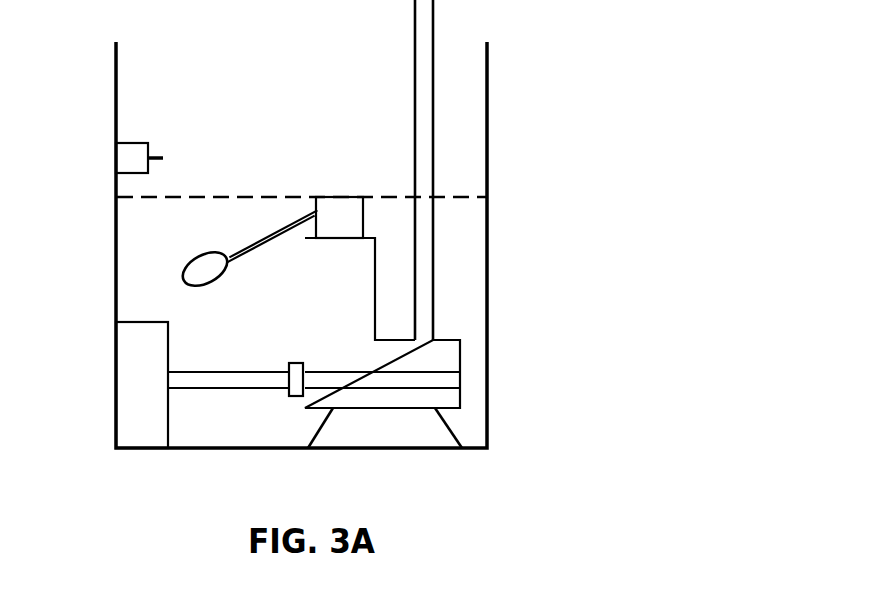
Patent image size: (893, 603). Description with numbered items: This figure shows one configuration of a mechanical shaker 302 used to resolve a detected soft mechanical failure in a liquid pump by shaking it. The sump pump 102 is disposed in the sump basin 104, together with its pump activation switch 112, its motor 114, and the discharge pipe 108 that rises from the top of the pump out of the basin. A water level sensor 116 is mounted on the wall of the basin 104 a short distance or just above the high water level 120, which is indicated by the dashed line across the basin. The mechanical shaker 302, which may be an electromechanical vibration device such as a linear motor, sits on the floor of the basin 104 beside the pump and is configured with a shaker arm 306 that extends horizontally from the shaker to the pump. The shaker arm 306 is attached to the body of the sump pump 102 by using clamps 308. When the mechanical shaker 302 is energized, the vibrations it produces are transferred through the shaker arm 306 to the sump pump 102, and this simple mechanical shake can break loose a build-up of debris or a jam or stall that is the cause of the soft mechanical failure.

The sump basin 104 is at (239, 70).
The discharge pipe 108 is at (434, 33).
The high water level 120 is at (326, 197).
The water level sensor 116 is at (120, 157).
The motor 114 is at (347, 197).
The pump activation switch 112 is at (202, 255).
The sump pump 102 is at (445, 353).
The clamps 308 is at (445, 380).
The mechanical shaker 302 is at (138, 360).
The shaker arm 306 is at (212, 389).